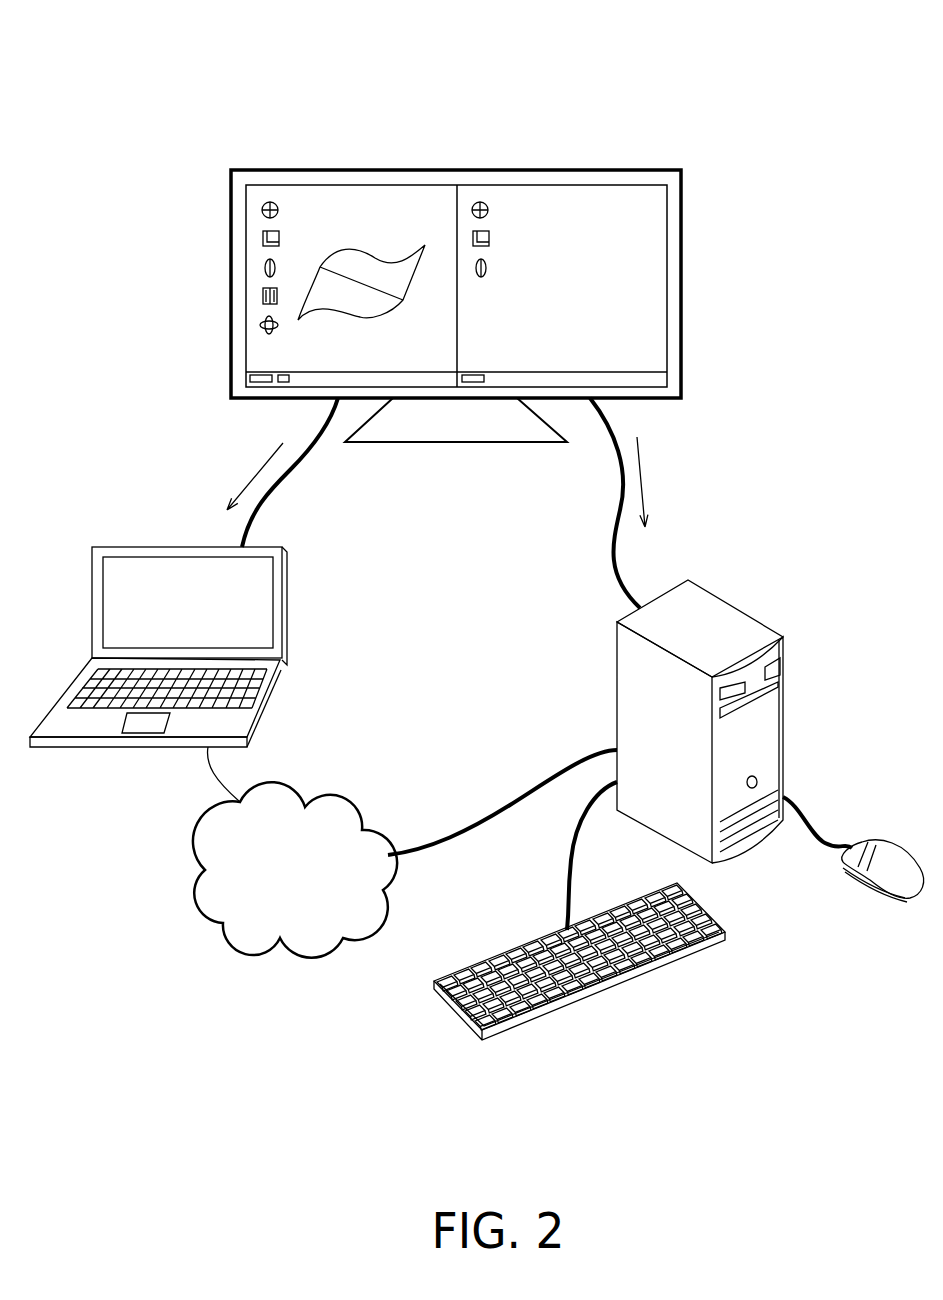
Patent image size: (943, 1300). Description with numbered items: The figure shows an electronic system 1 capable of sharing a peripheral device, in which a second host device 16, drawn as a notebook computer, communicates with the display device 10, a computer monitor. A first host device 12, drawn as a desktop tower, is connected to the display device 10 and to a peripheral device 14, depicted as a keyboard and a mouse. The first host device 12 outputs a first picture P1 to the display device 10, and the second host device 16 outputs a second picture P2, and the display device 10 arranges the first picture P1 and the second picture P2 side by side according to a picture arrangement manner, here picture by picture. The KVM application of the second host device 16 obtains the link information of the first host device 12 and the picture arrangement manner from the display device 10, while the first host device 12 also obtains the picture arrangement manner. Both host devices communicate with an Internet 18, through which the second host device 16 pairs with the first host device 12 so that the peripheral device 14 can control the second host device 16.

The electronic system 1 is at (772, 85).
The display device 10 is at (567, 168).
The first host device 12 is at (740, 607).
The peripheral device 14 is at (630, 983).
The second host device 16 is at (287, 630).
The Internet 18 is at (350, 807).
The first picture P1 is at (645, 293).
The second picture P2 is at (257, 282).